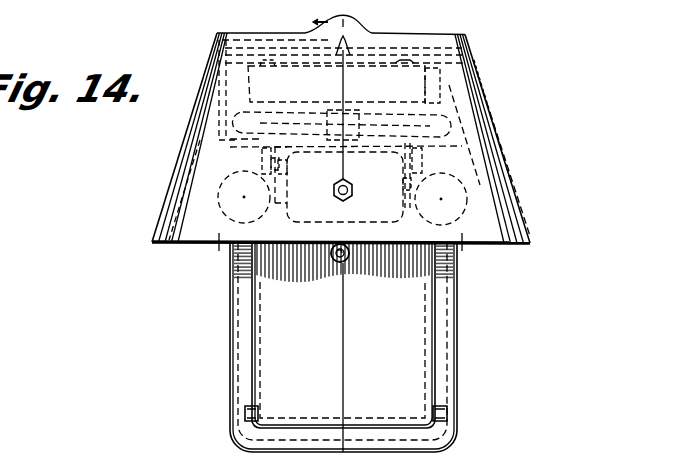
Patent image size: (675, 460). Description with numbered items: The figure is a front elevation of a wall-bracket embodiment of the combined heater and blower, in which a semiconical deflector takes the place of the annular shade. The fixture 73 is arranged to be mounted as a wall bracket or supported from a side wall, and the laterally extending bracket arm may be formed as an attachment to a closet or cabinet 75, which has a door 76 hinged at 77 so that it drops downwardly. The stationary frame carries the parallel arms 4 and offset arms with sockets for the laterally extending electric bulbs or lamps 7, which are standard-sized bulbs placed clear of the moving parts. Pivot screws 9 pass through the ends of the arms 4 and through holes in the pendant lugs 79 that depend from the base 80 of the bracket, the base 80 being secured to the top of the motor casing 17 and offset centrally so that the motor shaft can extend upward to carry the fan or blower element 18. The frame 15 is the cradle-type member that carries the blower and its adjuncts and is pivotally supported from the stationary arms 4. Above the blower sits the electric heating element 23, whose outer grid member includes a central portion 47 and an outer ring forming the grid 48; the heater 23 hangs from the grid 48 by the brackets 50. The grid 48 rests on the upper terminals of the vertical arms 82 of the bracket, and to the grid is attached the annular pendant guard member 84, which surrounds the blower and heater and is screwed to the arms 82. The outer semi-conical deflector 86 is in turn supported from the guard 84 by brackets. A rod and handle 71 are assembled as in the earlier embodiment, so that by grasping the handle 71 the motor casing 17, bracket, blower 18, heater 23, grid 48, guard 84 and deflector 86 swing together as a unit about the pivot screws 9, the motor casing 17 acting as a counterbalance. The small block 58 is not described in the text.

The parallel arms 4 is at (268, 180).
The electric bulbs or lamps 7 is at (220, 188).
The pivot screws 9 is at (261, 155).
The frame 15 is at (363, 23).
The motor casing 17 is at (290, 210).
The fan or blower element 18 is at (238, 124).
The electric heating element 23 is at (247, 72).
The central portion 47 is at (335, 45).
The grid 48 is at (437, 56).
The brackets 50 is at (417, 34).
The block 58 is at (441, 76).
The handle 71 is at (333, 187).
The fixture 73 is at (343, 142).
The closet or cabinet 75 is at (446, 344).
The door 76 is at (342, 350).
The hinge 77 is at (447, 414).
The pendant lugs 79 is at (405, 164).
The base 80 is at (222, 140).
The vertical arms 82 is at (455, 92).
The annular pendant guard member 84 is at (217, 110).
The outer semi-conical deflector 86 is at (500, 167).